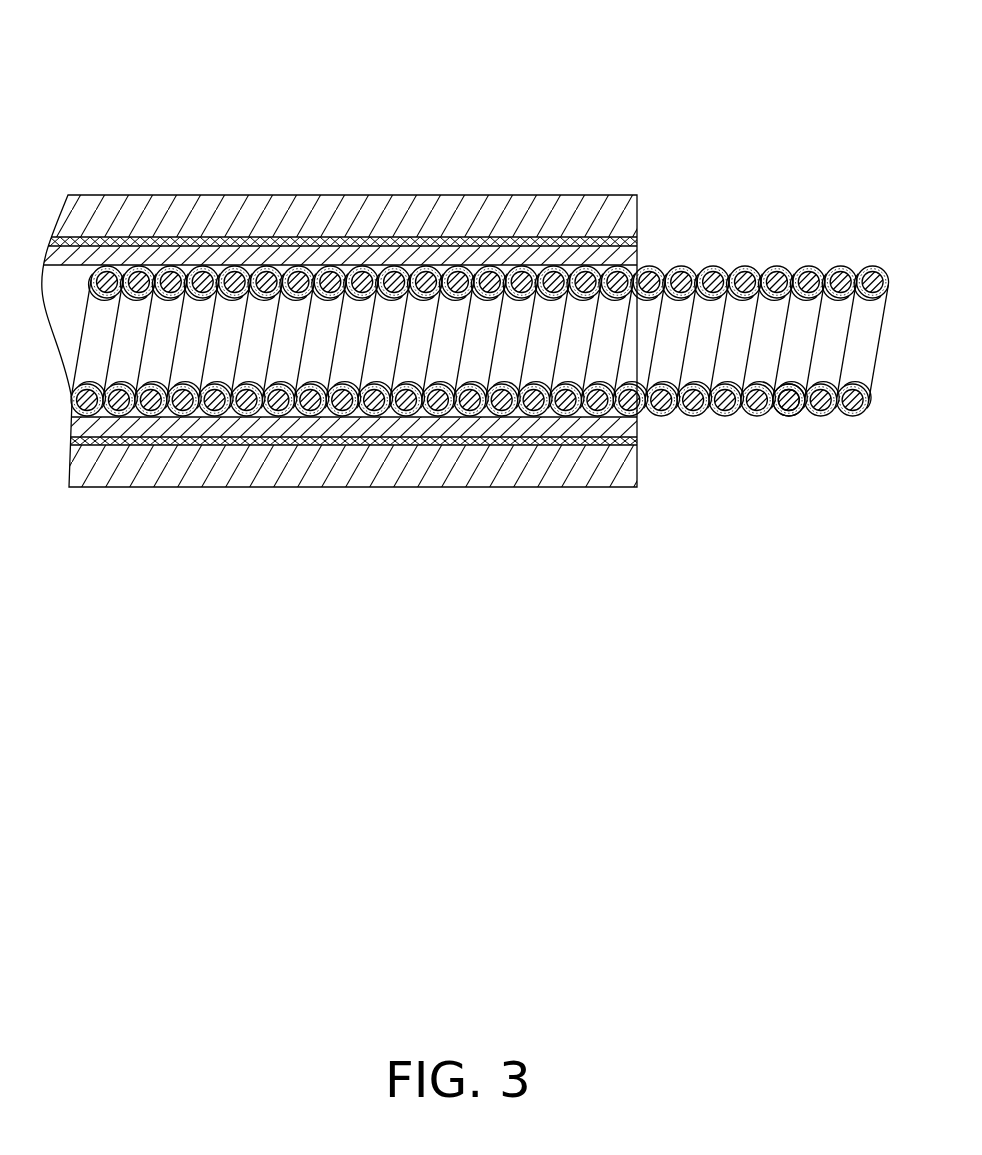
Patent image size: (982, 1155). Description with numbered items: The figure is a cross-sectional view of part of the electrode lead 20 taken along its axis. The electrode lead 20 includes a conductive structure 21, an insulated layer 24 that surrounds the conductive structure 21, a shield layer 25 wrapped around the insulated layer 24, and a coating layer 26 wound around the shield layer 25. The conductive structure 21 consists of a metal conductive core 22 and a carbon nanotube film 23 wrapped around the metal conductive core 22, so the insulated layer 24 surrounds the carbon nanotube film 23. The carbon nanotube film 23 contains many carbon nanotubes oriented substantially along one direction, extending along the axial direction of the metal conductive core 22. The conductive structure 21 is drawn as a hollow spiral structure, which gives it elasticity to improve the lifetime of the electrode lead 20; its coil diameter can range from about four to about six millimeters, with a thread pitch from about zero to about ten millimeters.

The electrode lead 20 is at (477, 46).
The conductive structure 21 is at (860, 511).
The metal conductive core 22 is at (775, 413).
The carbon nanotube film 23 is at (800, 413).
The insulated layer 24 is at (638, 256).
The shield layer 25 is at (638, 238).
The coating layer 26 is at (263, 220).